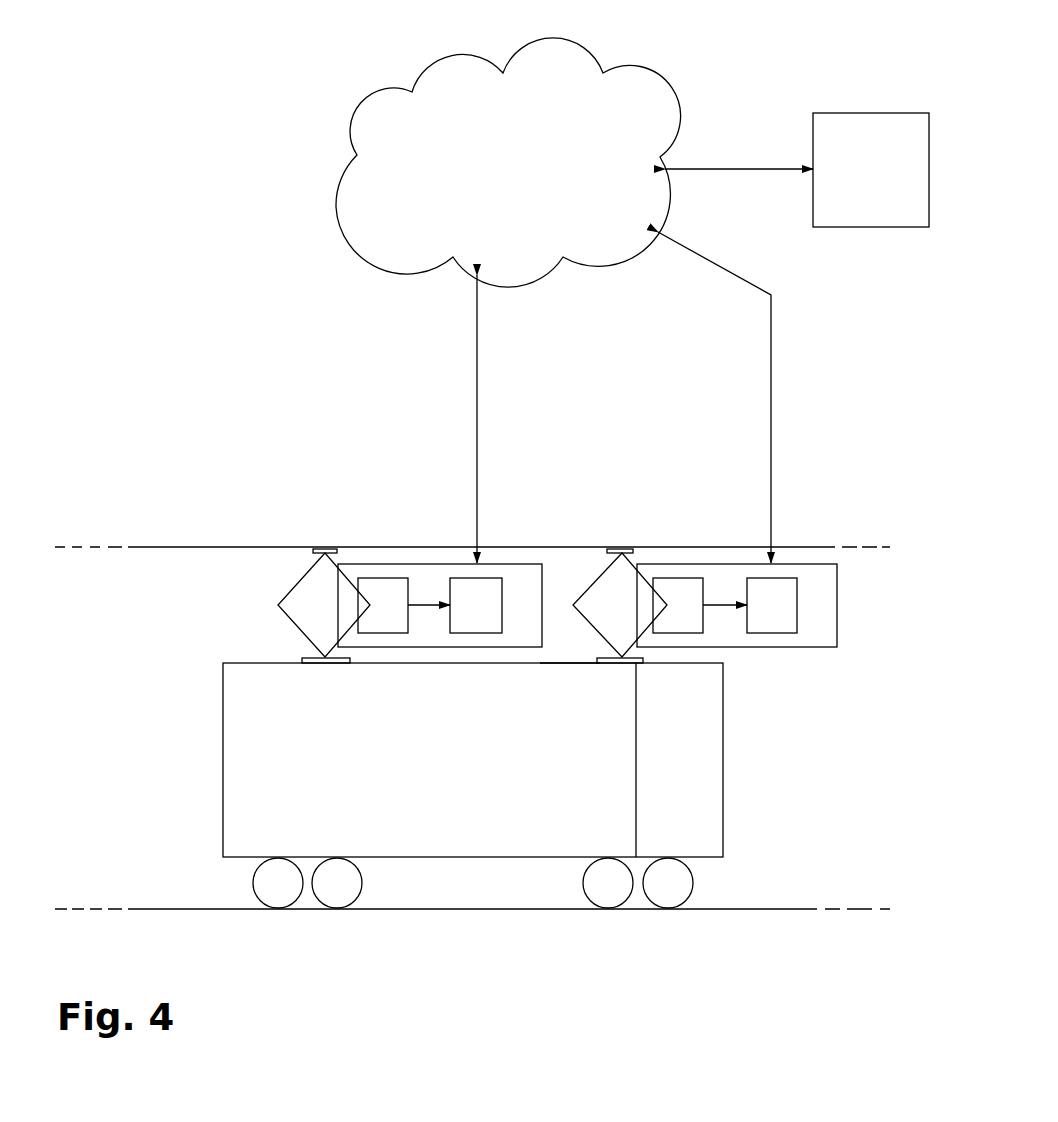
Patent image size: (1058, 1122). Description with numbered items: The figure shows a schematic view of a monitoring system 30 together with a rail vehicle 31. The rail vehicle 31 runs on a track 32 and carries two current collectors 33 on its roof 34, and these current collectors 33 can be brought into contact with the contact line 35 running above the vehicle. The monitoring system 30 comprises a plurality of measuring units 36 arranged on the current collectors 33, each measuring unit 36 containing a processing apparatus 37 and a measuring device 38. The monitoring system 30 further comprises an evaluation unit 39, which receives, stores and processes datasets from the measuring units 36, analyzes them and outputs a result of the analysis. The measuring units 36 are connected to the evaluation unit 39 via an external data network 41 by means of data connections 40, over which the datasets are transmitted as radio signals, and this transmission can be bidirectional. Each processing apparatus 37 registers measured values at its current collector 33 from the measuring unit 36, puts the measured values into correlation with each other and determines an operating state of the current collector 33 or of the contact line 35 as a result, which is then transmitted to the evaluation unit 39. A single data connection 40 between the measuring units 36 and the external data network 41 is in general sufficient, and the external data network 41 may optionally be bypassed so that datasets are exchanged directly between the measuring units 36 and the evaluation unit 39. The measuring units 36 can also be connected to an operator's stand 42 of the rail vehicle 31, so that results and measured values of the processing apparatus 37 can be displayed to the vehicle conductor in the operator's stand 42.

The monitoring system 30 is at (267, 87).
The rail vehicle 31 is at (185, 692).
The track 32 is at (782, 908).
The current collector 33 is at (302, 580).
The roof 34 is at (557, 663).
The contact line 35 is at (788, 547).
The measuring unit 36 is at (427, 563).
The processing apparatus 37 is at (492, 578).
The measuring device 38 is at (373, 578).
The evaluation unit 39 is at (889, 187).
The data connection 40 is at (746, 169).
The external data network 41 is at (530, 176).
The operator's stand 42 is at (690, 737).